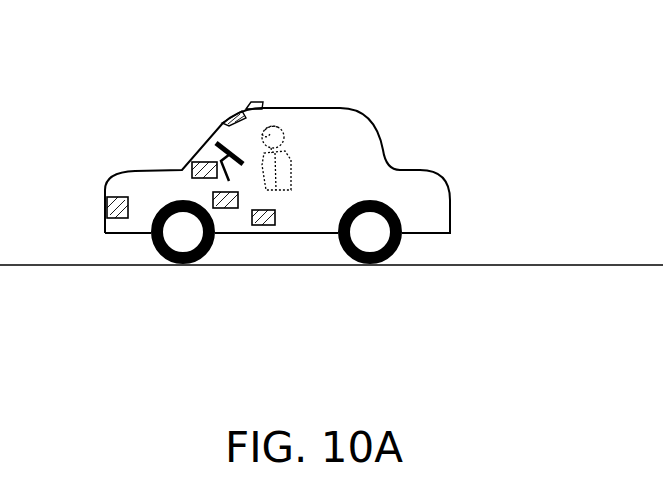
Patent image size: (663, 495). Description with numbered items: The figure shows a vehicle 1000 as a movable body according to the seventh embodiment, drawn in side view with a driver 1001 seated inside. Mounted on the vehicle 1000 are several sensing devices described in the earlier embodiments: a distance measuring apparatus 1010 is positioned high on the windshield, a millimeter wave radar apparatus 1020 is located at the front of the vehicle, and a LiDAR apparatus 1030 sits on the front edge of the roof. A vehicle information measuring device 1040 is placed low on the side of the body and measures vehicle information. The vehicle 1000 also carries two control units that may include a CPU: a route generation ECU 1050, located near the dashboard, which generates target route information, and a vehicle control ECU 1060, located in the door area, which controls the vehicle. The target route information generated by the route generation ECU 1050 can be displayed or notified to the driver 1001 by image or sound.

The vehicle 1000 is at (335, 147).
The driver 1001 is at (313, 156).
The distance measuring apparatus 1010 is at (205, 76).
The millimeter wave radar apparatus 1020 is at (86, 179).
The LiDAR apparatus 1030 is at (291, 83).
The vehicle information measuring device 1040 is at (320, 268).
The route generation ECU 1050 is at (156, 138).
The vehicle control ECU 1060 is at (233, 255).